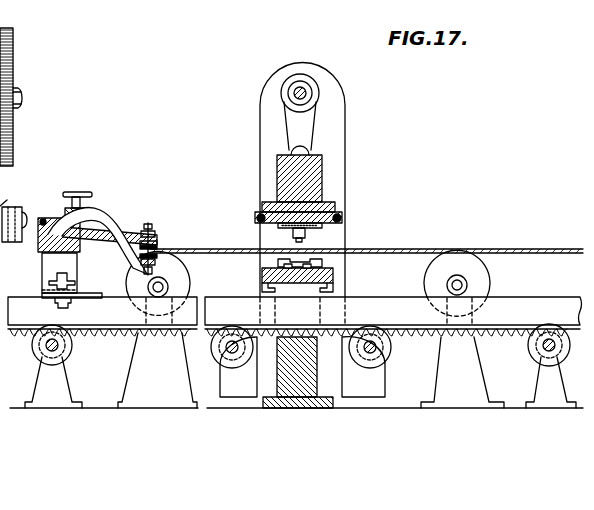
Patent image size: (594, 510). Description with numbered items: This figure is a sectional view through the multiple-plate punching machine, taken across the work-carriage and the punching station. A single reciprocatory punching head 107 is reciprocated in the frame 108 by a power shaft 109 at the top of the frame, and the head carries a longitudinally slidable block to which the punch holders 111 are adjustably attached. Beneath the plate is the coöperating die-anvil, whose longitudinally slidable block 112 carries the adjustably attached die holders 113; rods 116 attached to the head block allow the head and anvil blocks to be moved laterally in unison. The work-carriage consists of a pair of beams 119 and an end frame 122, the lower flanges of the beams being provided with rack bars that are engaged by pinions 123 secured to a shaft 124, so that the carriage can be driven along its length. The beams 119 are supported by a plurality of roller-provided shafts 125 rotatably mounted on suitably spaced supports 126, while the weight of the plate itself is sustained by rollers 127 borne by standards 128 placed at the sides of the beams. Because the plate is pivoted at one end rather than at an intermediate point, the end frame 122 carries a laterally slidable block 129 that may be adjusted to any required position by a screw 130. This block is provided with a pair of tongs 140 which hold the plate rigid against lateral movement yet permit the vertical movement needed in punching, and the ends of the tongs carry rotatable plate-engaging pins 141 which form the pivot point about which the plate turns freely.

The punching head 107 is at (319, 168).
The frame 108 is at (259, 124).
The power shaft 109 is at (308, 101).
The punch holders 111 is at (306, 236).
The longitudinally slidable block 112 is at (334, 278).
The die holders 113 is at (312, 260).
The rods 116 is at (259, 217).
The beams 119 is at (578, 297).
The end frame 122 is at (43, 276).
The pinions 123 is at (222, 346).
The shaft 124 is at (218, 364).
The roller-provided shafts 125 is at (62, 348).
The supports 126 is at (36, 379).
The rollers 127 is at (190, 282).
The standards 128 is at (477, 368).
The laterally slidable block 129 is at (37, 244).
The screw 130 is at (81, 207).
The tongs 140 is at (113, 222).
The plate-engaging pins 141 is at (162, 244).